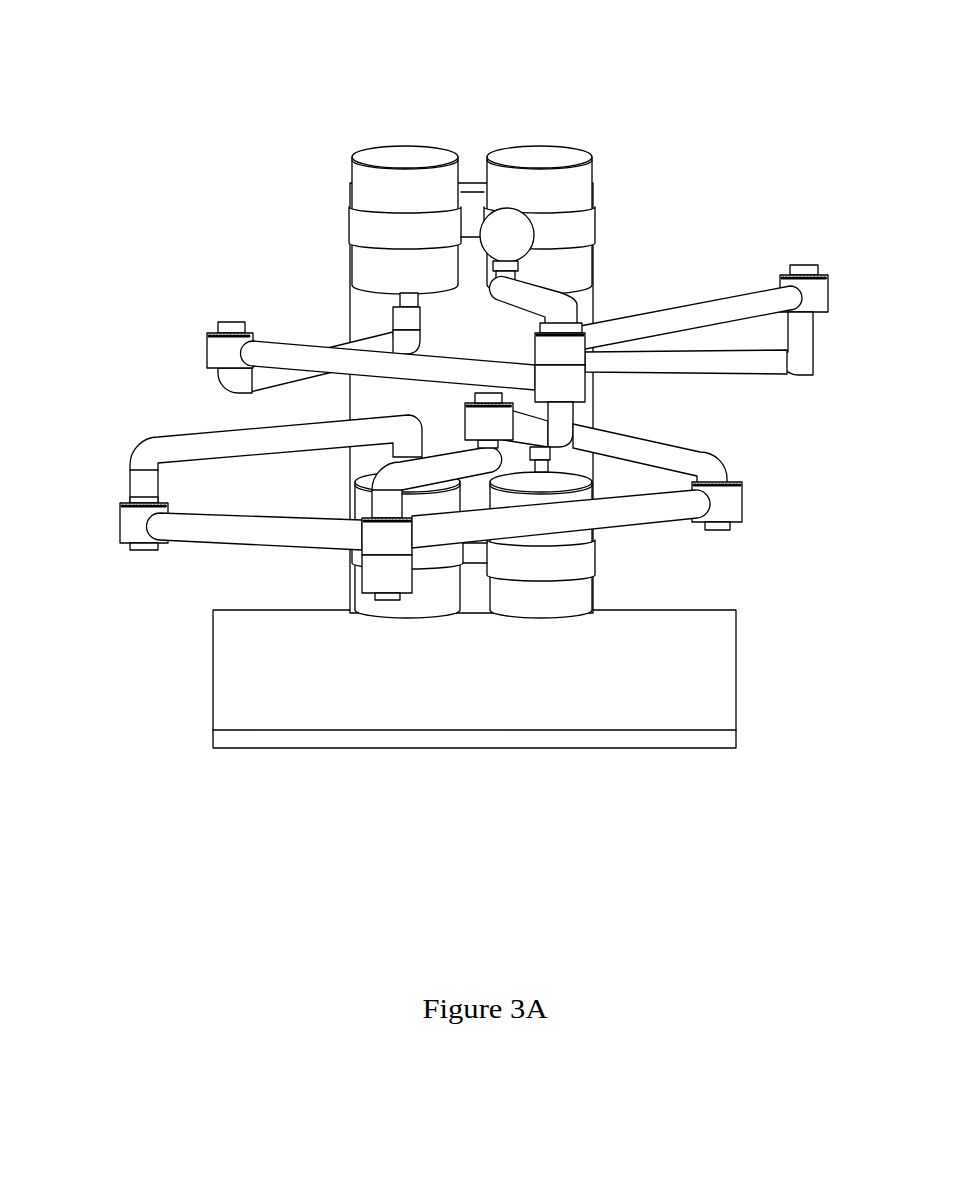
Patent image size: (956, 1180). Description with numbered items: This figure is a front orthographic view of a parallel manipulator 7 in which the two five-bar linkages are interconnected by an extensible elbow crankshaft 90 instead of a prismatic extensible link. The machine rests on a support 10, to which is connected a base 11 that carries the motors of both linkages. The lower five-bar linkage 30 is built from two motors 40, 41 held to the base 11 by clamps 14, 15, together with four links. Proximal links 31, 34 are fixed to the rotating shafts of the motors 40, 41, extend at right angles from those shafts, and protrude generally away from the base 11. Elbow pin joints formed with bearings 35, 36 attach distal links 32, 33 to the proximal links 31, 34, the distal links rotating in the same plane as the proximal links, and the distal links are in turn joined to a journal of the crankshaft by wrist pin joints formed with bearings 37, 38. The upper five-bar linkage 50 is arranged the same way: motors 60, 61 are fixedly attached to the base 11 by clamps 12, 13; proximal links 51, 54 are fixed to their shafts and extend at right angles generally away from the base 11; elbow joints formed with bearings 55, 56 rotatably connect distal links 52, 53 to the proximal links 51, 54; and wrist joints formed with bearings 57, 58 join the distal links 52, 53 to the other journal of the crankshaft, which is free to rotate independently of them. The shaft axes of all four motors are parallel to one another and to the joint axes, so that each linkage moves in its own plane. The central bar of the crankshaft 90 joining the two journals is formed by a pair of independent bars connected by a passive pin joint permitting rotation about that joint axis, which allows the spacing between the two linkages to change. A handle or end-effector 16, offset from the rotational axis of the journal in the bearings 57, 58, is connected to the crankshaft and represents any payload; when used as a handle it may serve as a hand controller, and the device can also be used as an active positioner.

The parallel manipulator 7 is at (472, 381).
The support 10 is at (723, 640).
The base 11 is at (588, 300).
The clamp 12 is at (360, 222).
The clamp 13 is at (586, 225).
The clamp 14 is at (430, 562).
The clamp 15 is at (583, 548).
The handle or end-effector 16 is at (518, 222).
The five-bar linkage 30 is at (422, 524).
The proximal link 31 is at (200, 442).
The distal link 32 is at (265, 540).
The distal link 33 is at (610, 510).
The proximal link 34 is at (668, 450).
The bearing 35 is at (122, 520).
The bearing 36 is at (732, 500).
The bearing 37 is at (360, 530).
The bearing 38 is at (375, 570).
The motor 40 is at (408, 605).
The motor 41 is at (538, 603).
The five-bar linkage 50 is at (514, 286).
The proximal link 51 is at (383, 340).
The distal link 52 is at (333, 348).
The distal link 53 is at (712, 308).
The proximal link 54 is at (810, 360).
The bearing 55 is at (213, 353).
The bearing 56 is at (815, 298).
The bearing 57 is at (568, 358).
The bearing 58 is at (565, 380).
The motor 60 is at (410, 148).
The motor 61 is at (540, 148).
The extensible elbow crankshaft 90 is at (453, 418).